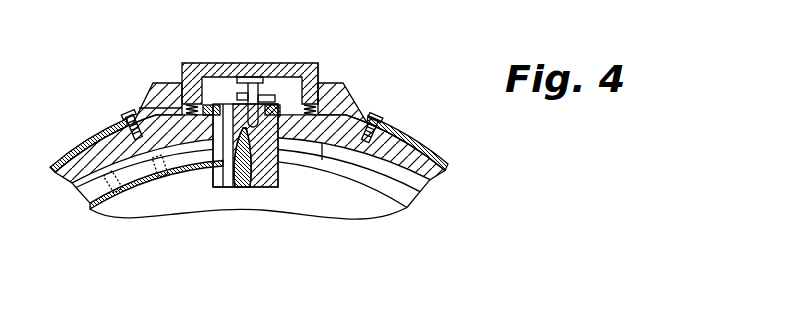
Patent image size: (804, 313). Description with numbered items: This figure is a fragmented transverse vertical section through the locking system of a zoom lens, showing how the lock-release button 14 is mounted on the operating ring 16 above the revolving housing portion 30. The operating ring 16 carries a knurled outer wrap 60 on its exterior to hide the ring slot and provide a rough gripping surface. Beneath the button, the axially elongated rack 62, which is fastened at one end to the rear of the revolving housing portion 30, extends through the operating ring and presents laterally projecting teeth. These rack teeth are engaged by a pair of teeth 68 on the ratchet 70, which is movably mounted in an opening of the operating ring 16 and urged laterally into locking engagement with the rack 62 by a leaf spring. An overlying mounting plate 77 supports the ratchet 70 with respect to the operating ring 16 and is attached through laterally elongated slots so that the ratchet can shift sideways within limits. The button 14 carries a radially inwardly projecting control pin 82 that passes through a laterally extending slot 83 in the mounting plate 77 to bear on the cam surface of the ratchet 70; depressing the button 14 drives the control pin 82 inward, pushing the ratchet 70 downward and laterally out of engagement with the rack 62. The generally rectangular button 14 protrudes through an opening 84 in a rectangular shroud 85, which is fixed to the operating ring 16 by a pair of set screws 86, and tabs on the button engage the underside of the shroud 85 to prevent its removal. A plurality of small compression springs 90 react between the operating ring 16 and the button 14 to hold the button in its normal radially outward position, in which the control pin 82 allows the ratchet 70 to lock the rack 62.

The button 14 is at (322, 72).
The operating ring 16 is at (420, 170).
The revolving housing portion 30 is at (90, 195).
The outer wrap 60 is at (435, 150).
The rack 62 is at (133, 200).
The teeth 68 is at (213, 178).
The ratchet 70 is at (270, 172).
The mounting plate 77 is at (280, 110).
The control pin 82 is at (232, 78).
The slot 83 is at (218, 80).
The opening 84 is at (180, 80).
The shroud 85 is at (343, 84).
The set screws 86 is at (380, 120).
The compression springs 90 is at (145, 103).